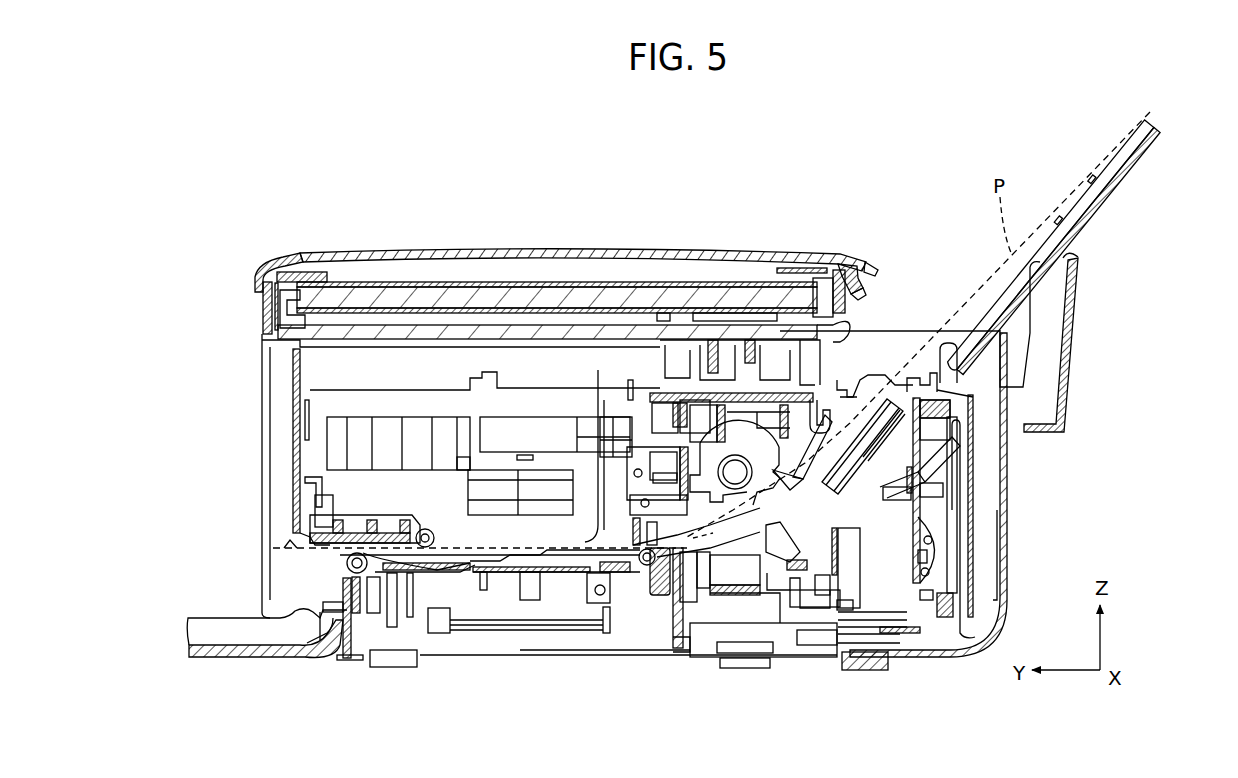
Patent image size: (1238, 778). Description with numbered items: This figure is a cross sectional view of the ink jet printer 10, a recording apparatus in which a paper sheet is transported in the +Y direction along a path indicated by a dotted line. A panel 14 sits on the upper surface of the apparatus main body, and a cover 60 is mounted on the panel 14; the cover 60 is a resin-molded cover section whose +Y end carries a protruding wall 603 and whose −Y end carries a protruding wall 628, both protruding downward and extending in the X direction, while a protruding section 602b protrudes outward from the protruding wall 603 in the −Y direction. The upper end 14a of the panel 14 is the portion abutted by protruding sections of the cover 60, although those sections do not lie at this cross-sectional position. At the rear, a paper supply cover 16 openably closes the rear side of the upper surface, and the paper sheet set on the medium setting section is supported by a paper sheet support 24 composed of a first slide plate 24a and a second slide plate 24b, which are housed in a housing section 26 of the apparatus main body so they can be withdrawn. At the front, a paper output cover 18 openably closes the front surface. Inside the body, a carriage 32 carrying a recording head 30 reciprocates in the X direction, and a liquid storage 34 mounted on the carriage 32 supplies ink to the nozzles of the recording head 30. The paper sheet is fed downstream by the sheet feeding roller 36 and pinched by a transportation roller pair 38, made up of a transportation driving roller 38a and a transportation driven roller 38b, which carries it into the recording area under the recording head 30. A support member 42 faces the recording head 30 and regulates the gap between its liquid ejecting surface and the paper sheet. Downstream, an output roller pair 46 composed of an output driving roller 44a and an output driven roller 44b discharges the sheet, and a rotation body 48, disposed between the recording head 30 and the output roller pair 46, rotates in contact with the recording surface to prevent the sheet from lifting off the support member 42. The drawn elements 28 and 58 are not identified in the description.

The ink jet printer 10 is at (415, 148).
The panel 14 is at (262, 310).
The upper end of the panel 14a is at (262, 266).
The protruding wall 628 is at (256, 288).
The display panel 28 is at (461, 282).
The cover 60 is at (512, 256).
The liquid storage 34 is at (367, 367).
The carriage 32 is at (600, 377).
The connector 58 is at (753, 347).
The protruding section 602b is at (872, 264).
The protruding wall 603 is at (867, 277).
The paper sheet support 24 is at (1193, 197).
The first slide plate 24a is at (1020, 280).
The second slide plate 24b is at (1117, 190).
The paper supply cover 16 is at (1067, 363).
The housing section 26 is at (988, 493).
The paper output cover 18 is at (228, 657).
The output roller pair 46 is at (400, 705).
The output driving roller 44a is at (368, 613).
The output driven roller 44b is at (292, 548).
The rotation body 48 is at (472, 553).
The support member 42 is at (518, 558).
The recording head 30 is at (573, 573).
The transportation roller pair 38 is at (710, 716).
The transportation driving roller 38a is at (647, 598).
The transportation driven roller 38b is at (683, 650).
The sheet feeding roller 36 is at (760, 460).